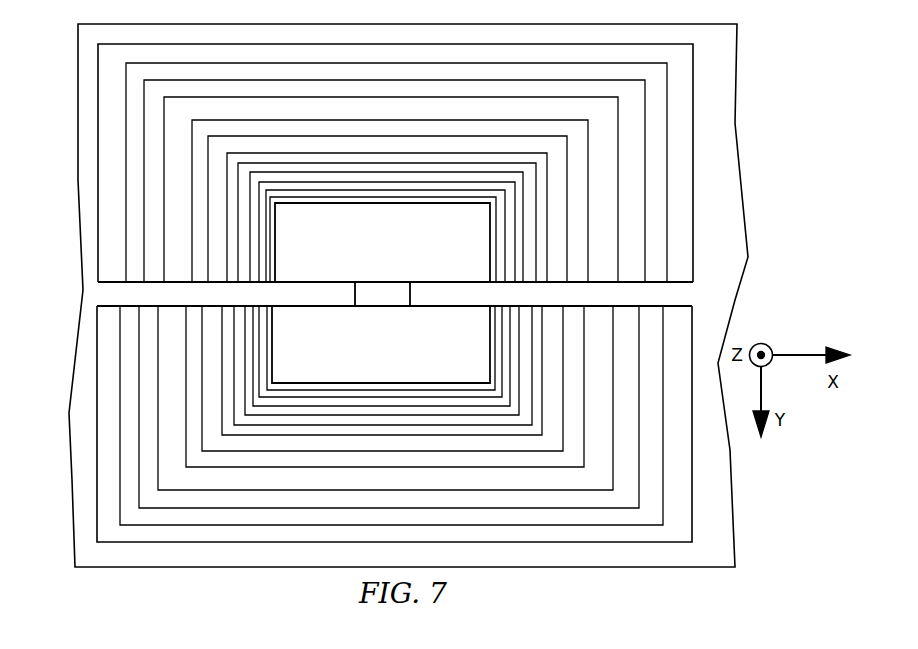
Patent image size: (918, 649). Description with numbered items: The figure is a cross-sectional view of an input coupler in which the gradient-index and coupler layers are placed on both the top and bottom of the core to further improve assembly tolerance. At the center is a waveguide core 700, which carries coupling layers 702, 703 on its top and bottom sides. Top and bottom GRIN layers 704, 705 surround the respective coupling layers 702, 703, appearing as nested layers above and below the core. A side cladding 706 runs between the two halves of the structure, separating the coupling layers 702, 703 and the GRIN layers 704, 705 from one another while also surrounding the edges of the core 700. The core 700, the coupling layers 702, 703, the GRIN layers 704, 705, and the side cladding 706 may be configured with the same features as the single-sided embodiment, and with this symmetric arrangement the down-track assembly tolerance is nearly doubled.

The waveguide core 700 is at (367, 303).
The coupling layer 702 is at (366, 251).
The coupling layer 703 is at (366, 359).
The GRIN layer 704 is at (117, 208).
The GRIN layer 705 is at (117, 448).
The side cladding 706 is at (107, 290).